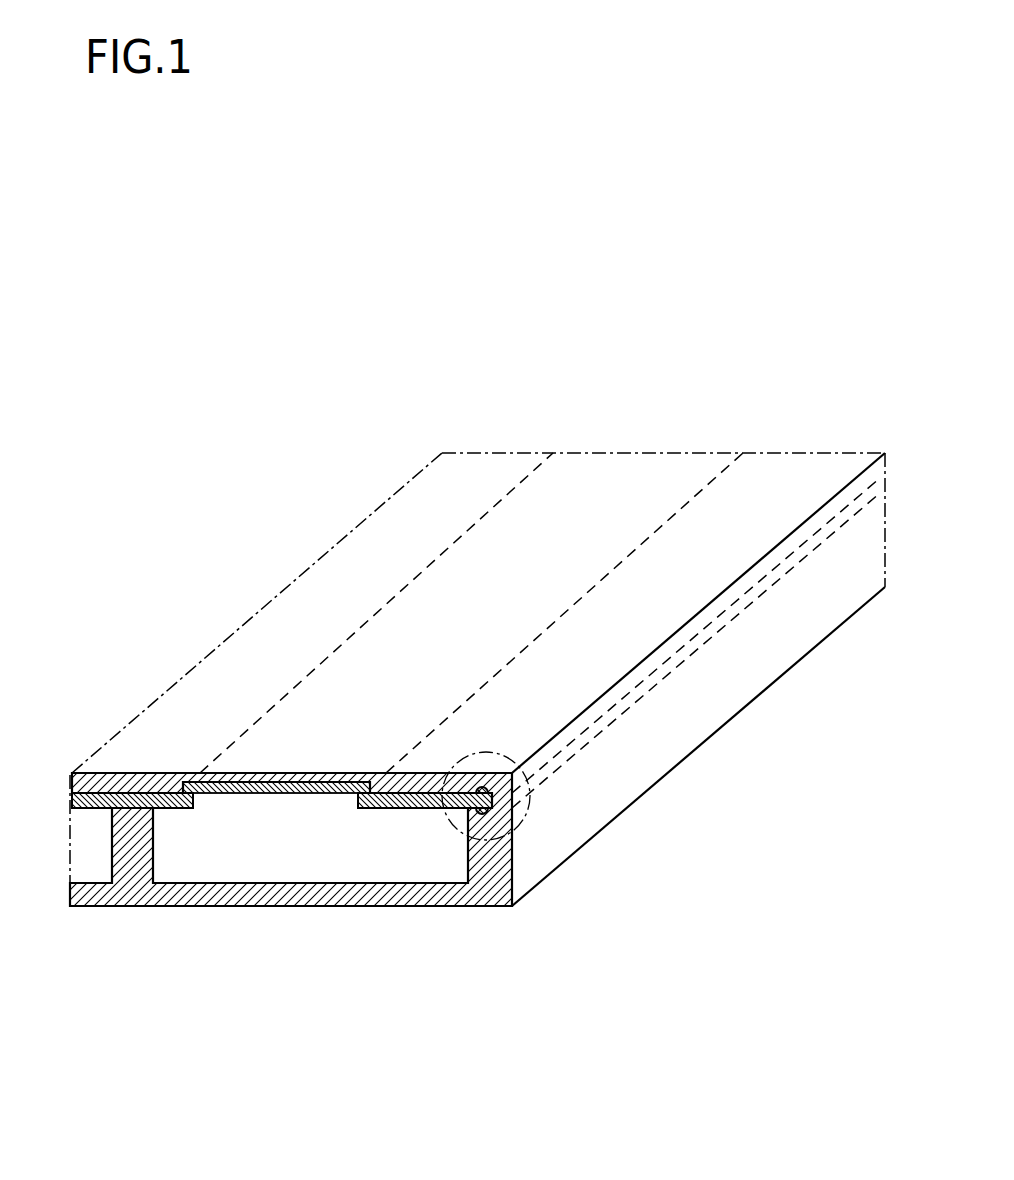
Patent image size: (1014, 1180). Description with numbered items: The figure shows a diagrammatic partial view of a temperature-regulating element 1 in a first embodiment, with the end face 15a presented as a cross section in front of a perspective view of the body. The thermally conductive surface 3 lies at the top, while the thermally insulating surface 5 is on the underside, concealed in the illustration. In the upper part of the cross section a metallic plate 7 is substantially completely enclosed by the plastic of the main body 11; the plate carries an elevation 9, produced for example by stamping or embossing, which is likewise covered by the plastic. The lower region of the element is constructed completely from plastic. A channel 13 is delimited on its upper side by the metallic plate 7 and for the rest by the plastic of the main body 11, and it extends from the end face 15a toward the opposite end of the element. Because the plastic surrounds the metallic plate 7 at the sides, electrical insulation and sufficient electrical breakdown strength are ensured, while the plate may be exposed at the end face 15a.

The temperature-regulating element 1 is at (530, 380).
The thermally conductive surface 3 is at (514, 603).
The thermally insulating surface 5 is at (677, 783).
The metallic plate 7 is at (70, 806).
The elevation 9 is at (200, 773).
The main body 11 is at (125, 902).
The channel 13 is at (368, 865).
The end face 15a is at (276, 918).